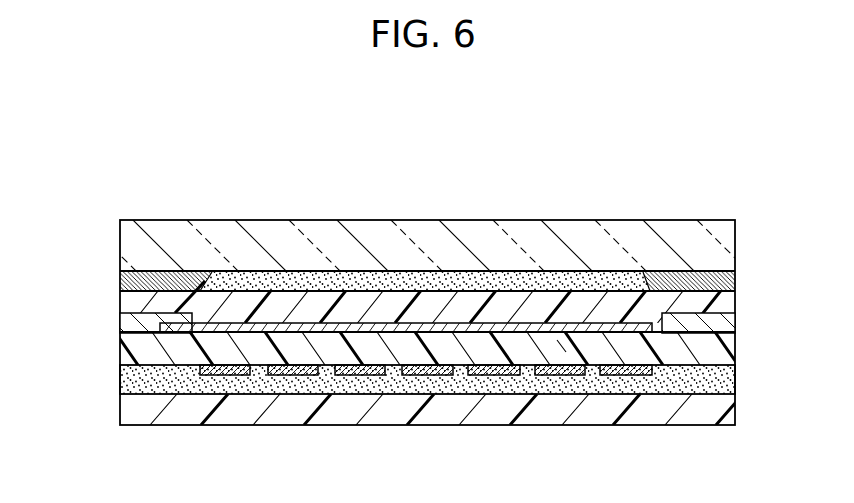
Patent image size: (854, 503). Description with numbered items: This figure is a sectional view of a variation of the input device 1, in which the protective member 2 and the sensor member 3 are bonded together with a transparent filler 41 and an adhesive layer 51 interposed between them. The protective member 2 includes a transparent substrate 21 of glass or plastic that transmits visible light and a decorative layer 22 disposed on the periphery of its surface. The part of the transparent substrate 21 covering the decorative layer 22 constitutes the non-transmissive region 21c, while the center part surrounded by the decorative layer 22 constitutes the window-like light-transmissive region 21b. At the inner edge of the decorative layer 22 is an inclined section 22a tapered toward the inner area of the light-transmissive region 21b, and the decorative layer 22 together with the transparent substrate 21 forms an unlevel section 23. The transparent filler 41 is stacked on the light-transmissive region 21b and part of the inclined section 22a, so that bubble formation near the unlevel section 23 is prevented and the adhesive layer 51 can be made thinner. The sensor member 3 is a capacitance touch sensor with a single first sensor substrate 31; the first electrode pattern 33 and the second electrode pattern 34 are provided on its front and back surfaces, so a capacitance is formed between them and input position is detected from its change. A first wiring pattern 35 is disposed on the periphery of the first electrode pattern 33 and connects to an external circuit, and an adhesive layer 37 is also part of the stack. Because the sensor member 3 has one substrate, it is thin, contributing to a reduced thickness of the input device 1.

The input device 1 is at (542, 132).
The protective member 2 is at (638, 168).
The transparent substrate 21 is at (723, 233).
The light-transmissive region 21b is at (215, 208).
The non-transmissive region 21c is at (115, 208).
The decorative layer 22 is at (699, 283).
The inclined section 22a is at (648, 288).
The unlevel section 23 is at (222, 295).
The sensor member 3 is at (747, 427).
The first sensor substrate 31 is at (423, 357).
The first electrode pattern 33 is at (561, 336).
The second electrode pattern 34 is at (631, 376).
The first wiring pattern 35 is at (130, 328).
The adhesive layer 37 is at (676, 386).
The transparent filler 41 is at (247, 330).
The adhesive layer 51 is at (309, 302).